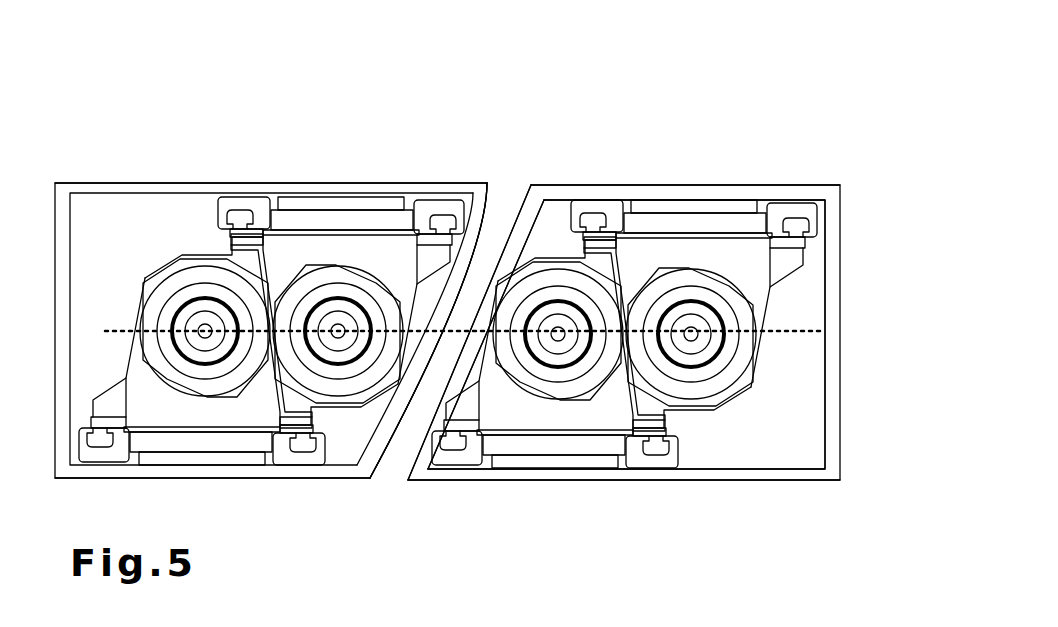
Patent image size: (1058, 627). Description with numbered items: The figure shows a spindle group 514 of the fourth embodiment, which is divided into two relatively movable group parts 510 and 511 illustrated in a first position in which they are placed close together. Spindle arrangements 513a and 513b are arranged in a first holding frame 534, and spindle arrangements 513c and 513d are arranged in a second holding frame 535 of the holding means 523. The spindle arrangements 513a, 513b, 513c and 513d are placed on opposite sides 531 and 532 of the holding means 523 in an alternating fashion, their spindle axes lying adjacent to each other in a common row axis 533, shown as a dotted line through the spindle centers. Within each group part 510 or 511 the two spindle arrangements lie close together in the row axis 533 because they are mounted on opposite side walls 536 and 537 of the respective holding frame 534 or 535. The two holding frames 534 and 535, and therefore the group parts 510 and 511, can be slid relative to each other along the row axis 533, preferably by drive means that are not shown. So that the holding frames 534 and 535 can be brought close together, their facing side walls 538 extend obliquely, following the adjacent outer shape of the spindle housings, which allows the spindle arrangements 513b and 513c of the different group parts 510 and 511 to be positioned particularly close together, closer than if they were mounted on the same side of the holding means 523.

The spindle group 514 is at (476, 276).
The group part 510 is at (250, 166).
The group part 511 is at (700, 168).
The holding means 523 is at (454, 159).
The side of the holding means 531 is at (775, 473).
The side of the holding means 532 is at (172, 195).
The row axis 533 is at (501, 286).
The first holding frame 534 is at (300, 479).
The second holding frame 535 is at (753, 480).
The side wall 536 is at (200, 478).
The side wall 537 is at (87, 184).
The side wall 538 is at (517, 213).
The spindle arrangement 513a is at (144, 273).
The spindle arrangement 513b is at (352, 195).
The spindle arrangement 513c is at (553, 476).
The spindle arrangement 513d is at (799, 196).